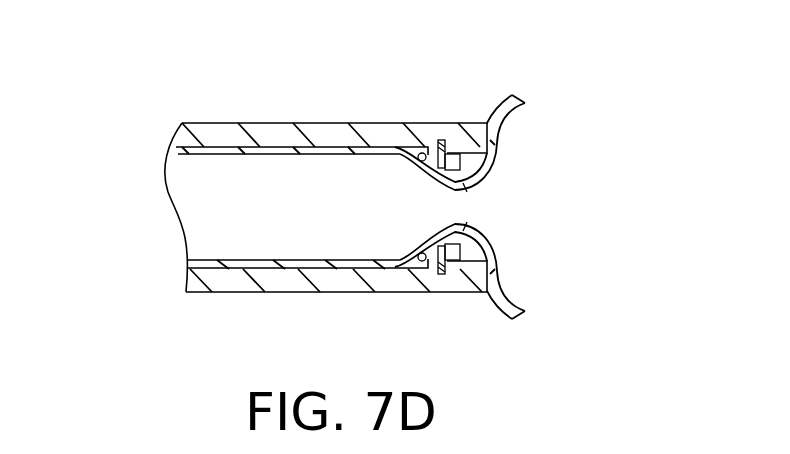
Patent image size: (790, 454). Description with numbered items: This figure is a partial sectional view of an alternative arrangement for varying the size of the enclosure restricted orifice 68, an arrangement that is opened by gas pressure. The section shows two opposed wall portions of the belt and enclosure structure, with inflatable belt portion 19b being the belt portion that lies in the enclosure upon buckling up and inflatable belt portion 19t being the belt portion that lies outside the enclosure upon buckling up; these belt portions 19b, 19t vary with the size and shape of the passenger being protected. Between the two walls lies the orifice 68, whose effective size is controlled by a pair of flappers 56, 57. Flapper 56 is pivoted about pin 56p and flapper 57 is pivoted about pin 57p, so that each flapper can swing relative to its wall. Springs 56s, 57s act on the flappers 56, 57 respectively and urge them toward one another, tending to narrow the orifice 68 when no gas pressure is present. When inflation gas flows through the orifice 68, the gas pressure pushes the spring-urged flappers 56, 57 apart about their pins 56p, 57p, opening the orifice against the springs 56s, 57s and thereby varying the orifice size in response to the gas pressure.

The inflatable belt portion 19b is at (217, 157).
The inflatable belt portion 19t is at (518, 313).
The flapper 56 is at (413, 172).
The pin 56p is at (419, 148).
The spring 56s is at (438, 140).
The flapper 57 is at (427, 243).
The pin 57p is at (419, 264).
The spring 57s is at (437, 285).
The enclosure restricted orifice 68 is at (487, 212).